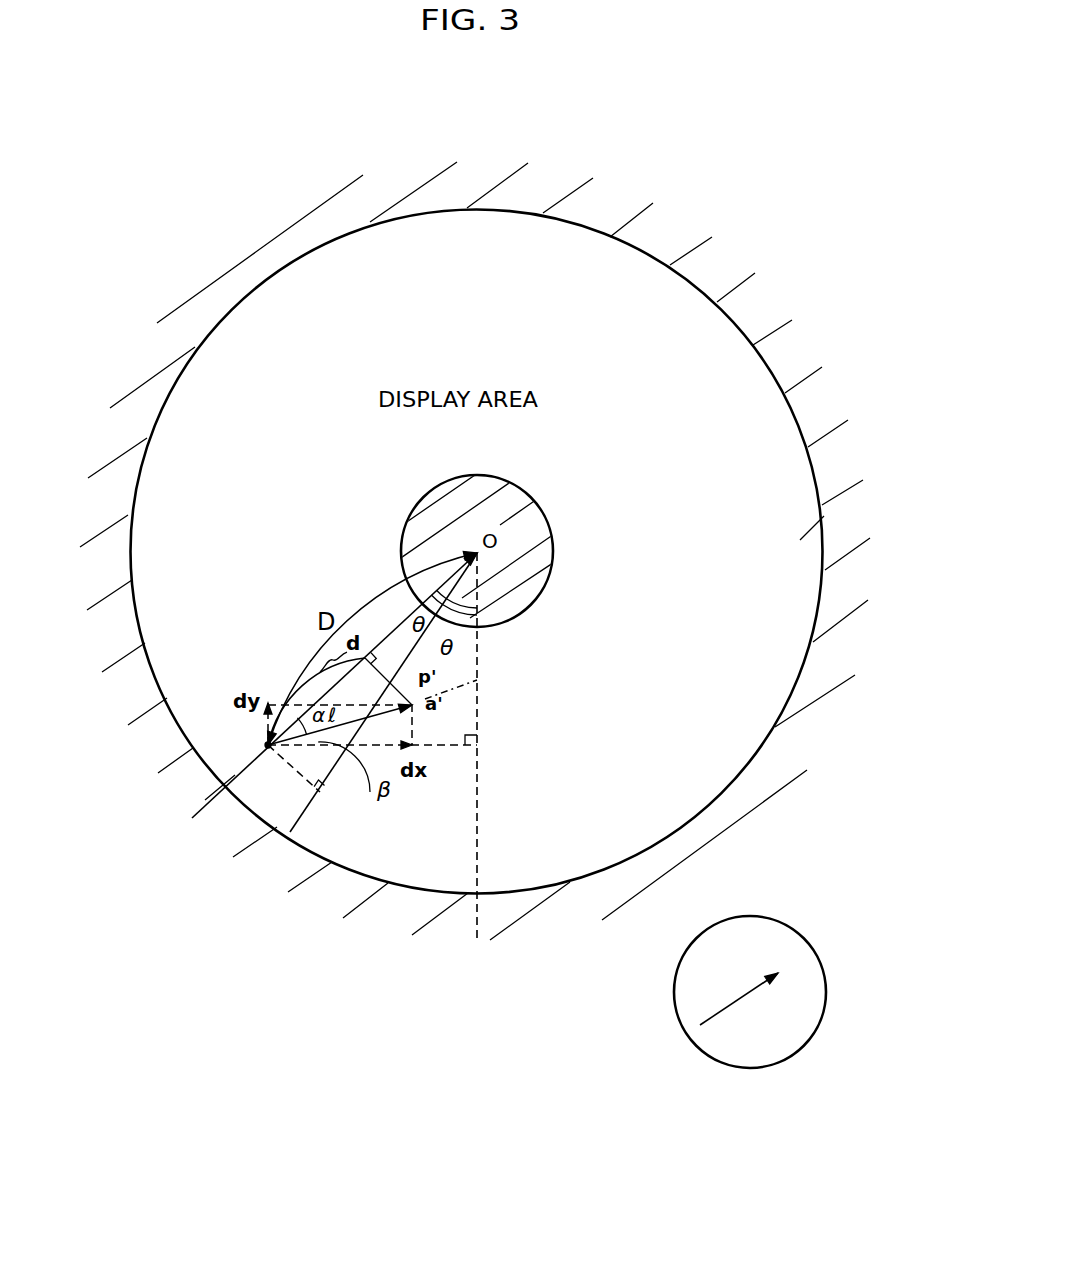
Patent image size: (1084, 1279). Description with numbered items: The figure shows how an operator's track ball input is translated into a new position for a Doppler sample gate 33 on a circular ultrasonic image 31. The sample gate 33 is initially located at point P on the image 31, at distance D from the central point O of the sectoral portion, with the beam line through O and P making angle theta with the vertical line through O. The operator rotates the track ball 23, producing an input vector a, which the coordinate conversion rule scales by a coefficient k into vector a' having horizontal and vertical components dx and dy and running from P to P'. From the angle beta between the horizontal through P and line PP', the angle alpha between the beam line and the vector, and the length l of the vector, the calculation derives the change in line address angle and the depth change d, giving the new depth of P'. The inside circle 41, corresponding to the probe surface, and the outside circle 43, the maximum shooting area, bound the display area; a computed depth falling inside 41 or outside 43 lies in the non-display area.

The track ball 23 is at (823, 977).
The circular ultrasonic image 31 is at (824, 516).
The Doppler sample gate 33 is at (268, 745).
The inside circle 41 is at (555, 570).
The outside circle 43 is at (548, 884).